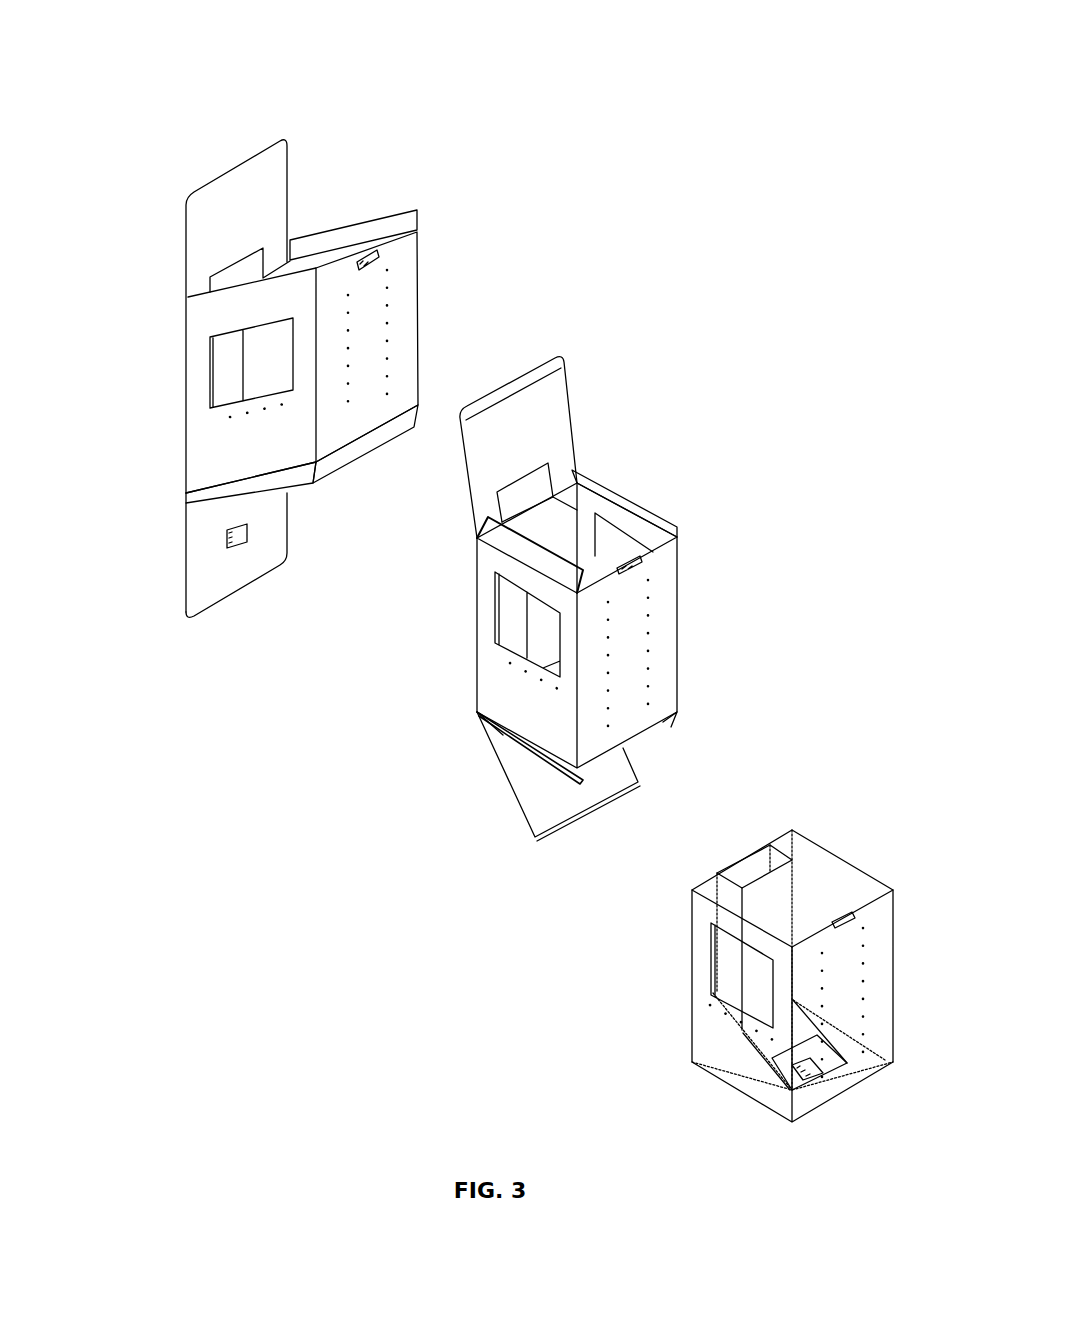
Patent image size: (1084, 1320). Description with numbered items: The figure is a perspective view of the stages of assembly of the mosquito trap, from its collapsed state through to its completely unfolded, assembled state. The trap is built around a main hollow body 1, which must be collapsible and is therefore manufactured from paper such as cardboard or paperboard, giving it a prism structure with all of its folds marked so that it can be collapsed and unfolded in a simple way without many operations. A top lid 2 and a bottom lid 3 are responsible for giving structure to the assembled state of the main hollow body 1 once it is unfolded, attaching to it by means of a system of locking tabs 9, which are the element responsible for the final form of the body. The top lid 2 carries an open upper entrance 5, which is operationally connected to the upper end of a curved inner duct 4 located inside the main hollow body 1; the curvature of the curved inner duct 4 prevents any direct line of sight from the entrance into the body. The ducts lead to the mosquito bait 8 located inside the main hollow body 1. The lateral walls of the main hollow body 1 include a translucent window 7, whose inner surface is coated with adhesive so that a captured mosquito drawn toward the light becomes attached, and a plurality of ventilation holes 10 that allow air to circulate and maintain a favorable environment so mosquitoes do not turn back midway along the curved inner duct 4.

The main hollow body 1 is at (407, 315).
The top lid 2 is at (257, 203).
The bottom lid 3 is at (273, 518).
The curved inner duct 4 is at (568, 530).
The open upper entrance 5 is at (245, 272).
The translucent window 7 is at (210, 380).
The mosquito bait 8 is at (233, 543).
The locking tabs 9 is at (235, 167).
The ventilation holes 10 is at (387, 378).